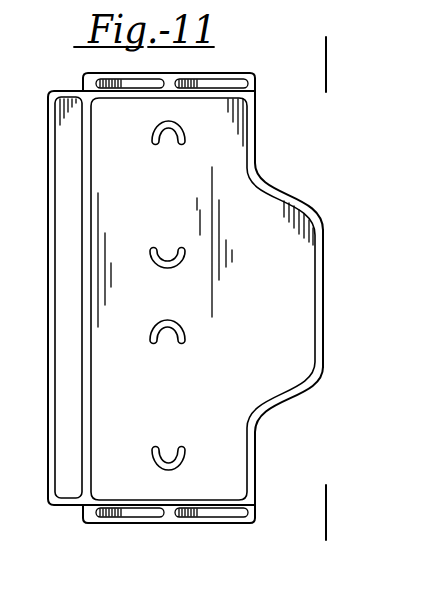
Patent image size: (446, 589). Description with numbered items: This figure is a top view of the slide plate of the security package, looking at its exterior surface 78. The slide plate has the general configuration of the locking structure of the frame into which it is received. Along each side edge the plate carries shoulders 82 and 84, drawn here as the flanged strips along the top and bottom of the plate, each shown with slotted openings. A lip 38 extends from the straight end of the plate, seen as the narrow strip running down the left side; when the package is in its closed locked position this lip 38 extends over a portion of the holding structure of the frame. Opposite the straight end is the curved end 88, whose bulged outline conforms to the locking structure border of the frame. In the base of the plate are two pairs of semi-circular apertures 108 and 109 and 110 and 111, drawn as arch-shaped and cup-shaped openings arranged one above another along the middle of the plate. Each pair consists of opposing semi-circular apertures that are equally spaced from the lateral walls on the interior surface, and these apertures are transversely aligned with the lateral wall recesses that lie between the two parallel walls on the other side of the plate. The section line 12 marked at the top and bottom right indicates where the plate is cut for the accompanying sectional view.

The section line 12- 12 is at (288, 531).
The lip 38 is at (65, 486).
The exterior surface 78 is at (285, 370).
The shoulder 82 is at (217, 523).
The shoulder 84 is at (242, 73).
The curved end 88 is at (323, 287).
The semi-circular aperture 108 is at (165, 140).
The semi-circular aperture 109 is at (172, 258).
The semi-circular aperture 110 is at (165, 341).
The semi-circular aperture 111 is at (170, 447).